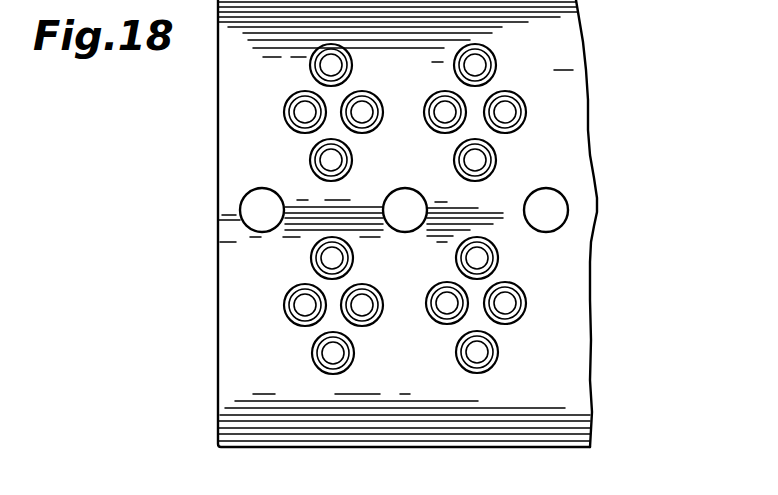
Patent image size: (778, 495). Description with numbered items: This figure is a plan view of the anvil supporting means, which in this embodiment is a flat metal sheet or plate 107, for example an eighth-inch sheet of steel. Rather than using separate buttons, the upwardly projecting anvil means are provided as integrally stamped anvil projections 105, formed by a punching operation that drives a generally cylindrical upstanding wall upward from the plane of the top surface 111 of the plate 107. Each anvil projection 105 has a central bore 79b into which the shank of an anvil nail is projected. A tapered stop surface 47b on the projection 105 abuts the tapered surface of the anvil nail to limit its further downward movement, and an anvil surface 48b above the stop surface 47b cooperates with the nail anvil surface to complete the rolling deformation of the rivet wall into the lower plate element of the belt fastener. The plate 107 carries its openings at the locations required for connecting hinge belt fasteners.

The flat metal sheet or plate 107 is at (598, 228).
The top surface 111 is at (557, 158).
The anvil projections 105 is at (499, 65).
The central bore 79b is at (477, 64).
The anvil surface 48b is at (455, 70).
The tapered stop surface 47b is at (462, 78).